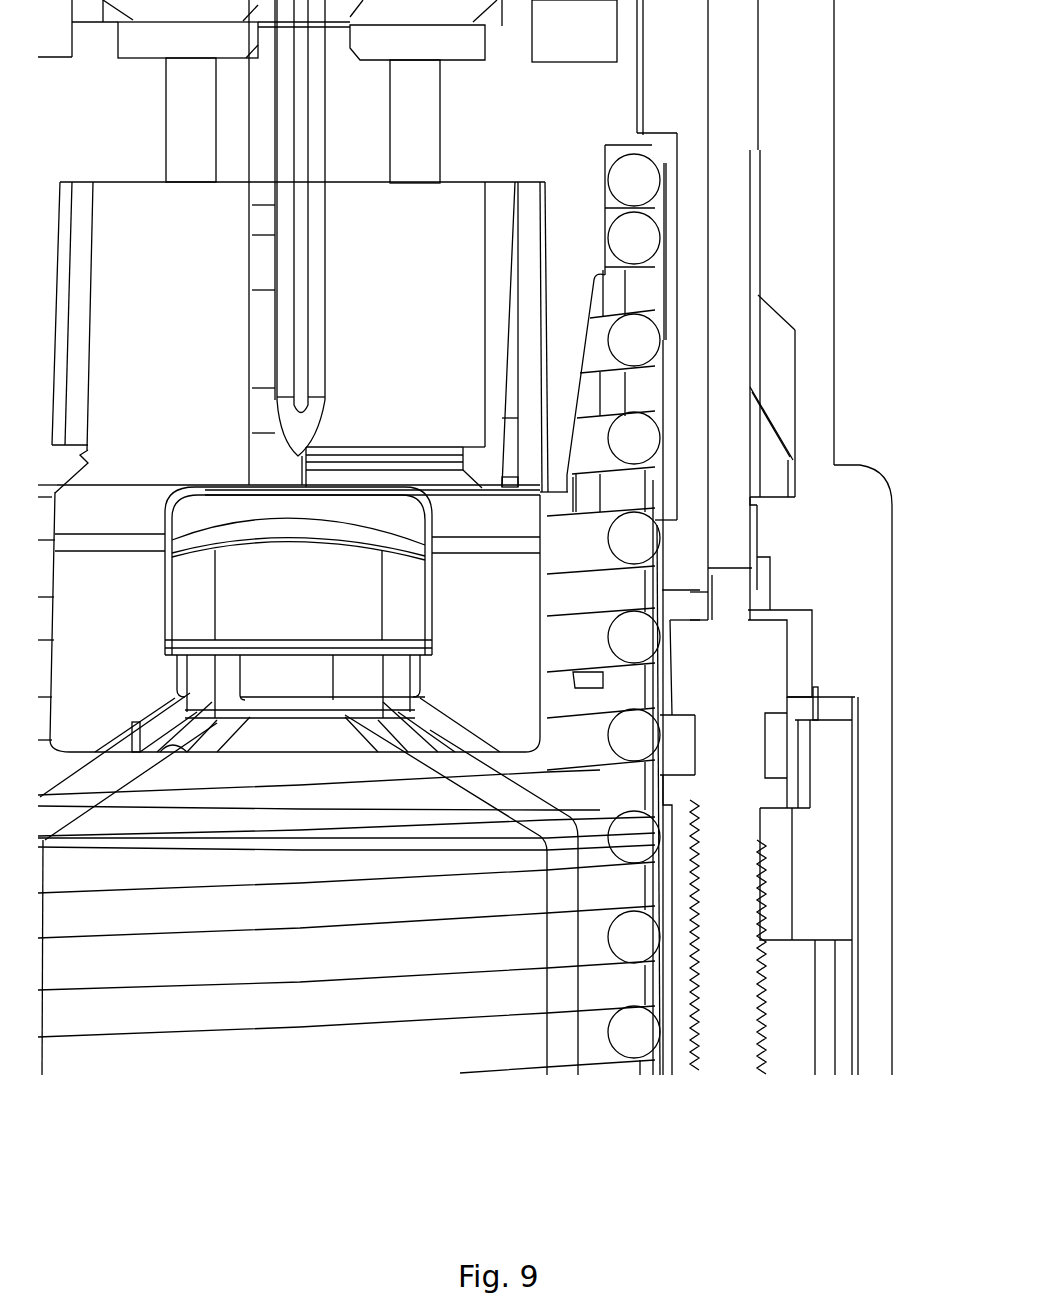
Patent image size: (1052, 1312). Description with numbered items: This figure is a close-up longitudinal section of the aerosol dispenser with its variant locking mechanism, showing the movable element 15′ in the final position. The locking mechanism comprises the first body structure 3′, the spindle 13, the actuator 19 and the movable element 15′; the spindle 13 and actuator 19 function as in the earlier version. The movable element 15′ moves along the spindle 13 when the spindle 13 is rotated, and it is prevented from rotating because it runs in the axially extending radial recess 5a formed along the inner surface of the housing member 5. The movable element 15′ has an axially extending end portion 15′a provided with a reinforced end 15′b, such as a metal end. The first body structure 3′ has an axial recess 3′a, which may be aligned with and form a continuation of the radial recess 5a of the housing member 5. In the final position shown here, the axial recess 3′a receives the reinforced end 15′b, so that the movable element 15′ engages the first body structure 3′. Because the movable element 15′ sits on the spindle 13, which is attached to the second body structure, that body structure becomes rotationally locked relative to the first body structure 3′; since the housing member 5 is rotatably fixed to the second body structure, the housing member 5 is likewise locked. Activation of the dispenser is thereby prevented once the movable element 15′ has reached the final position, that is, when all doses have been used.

The first body structure 3′ is at (860, 465).
The axial recess 3′a is at (845, 665).
The housing member 5 is at (893, 748).
The radial recess 5a is at (833, 1068).
The spindle 13 is at (752, 993).
The movable element 15′ is at (858, 850).
The axially extending end portion 15′a is at (822, 803).
The reinforced end 15′b is at (822, 705).
The actuator 19 is at (775, 643).